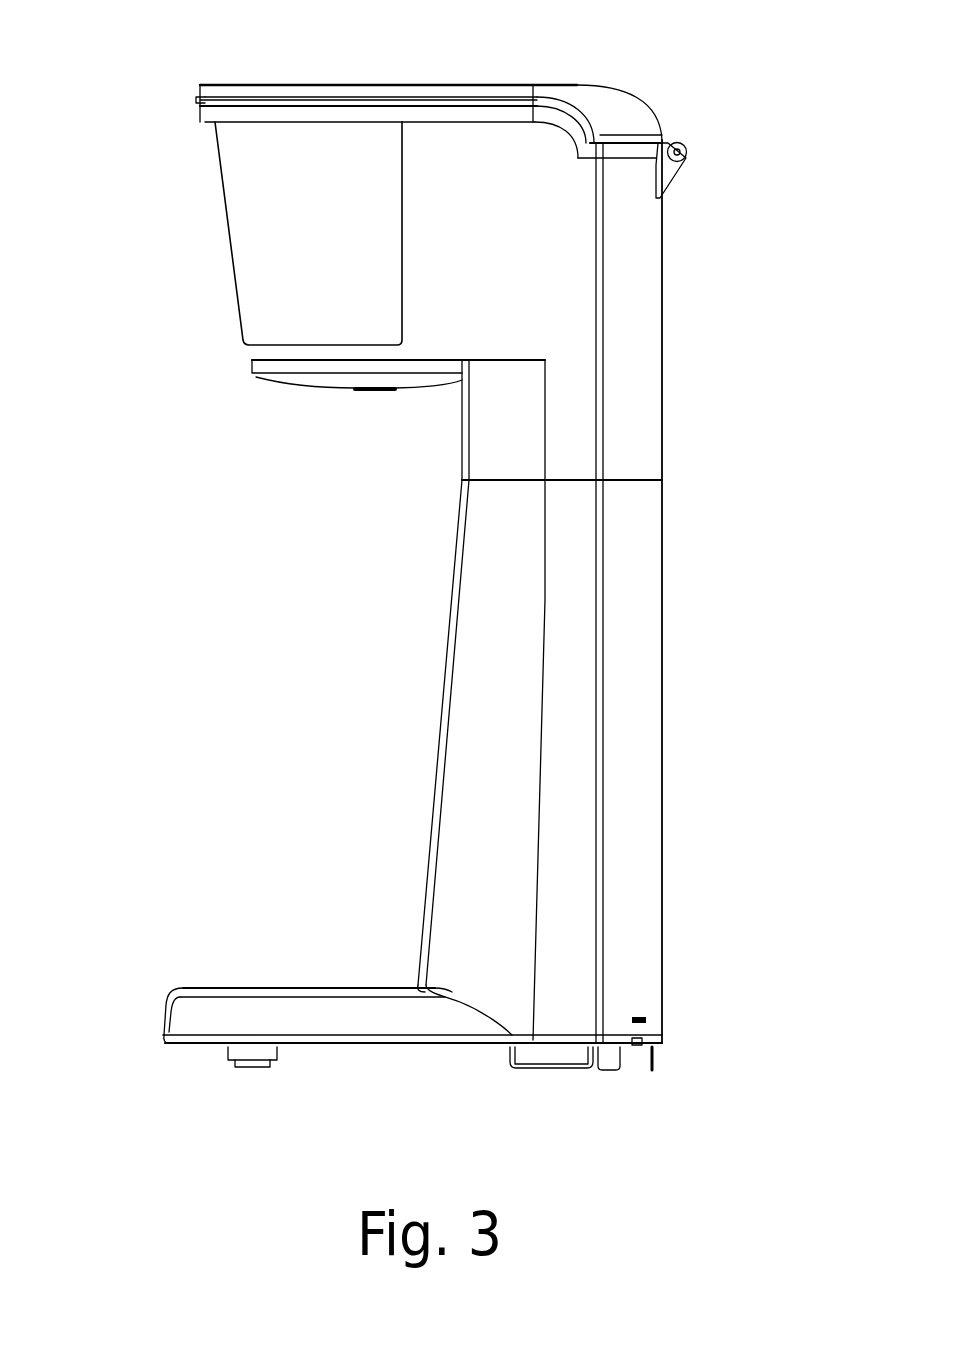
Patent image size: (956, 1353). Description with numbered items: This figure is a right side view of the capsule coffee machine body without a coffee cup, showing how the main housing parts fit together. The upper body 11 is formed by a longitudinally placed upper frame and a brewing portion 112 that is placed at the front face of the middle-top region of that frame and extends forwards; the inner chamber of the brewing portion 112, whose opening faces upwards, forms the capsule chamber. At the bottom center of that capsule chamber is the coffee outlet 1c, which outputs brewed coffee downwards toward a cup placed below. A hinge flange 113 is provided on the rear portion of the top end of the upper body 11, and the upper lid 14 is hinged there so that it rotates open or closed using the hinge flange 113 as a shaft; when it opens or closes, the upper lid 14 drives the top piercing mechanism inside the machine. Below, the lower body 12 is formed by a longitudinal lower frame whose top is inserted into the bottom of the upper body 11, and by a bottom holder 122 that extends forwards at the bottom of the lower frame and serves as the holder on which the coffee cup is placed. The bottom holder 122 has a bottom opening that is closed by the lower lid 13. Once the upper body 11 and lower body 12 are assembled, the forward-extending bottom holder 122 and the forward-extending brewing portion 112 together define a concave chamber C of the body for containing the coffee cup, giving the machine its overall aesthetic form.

The chamber C is at (456, 580).
The upper body 11 is at (615, 327).
The brewing portion 112 is at (277, 215).
The hinge flange 113 is at (682, 143).
The upper lid 14 is at (355, 84).
The lower body 12 is at (638, 845).
The bottom holder 122 is at (282, 1012).
The lower lid 13 is at (327, 1040).
The coffee outlet 1c is at (368, 391).